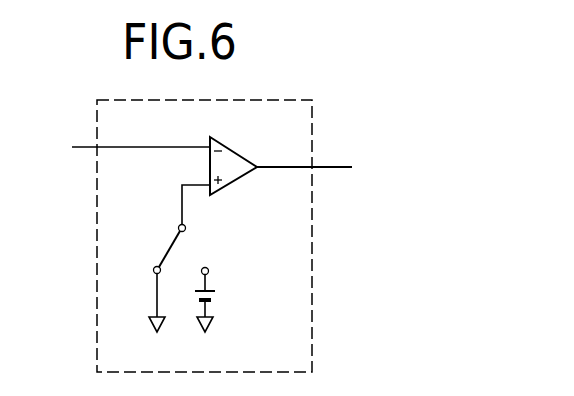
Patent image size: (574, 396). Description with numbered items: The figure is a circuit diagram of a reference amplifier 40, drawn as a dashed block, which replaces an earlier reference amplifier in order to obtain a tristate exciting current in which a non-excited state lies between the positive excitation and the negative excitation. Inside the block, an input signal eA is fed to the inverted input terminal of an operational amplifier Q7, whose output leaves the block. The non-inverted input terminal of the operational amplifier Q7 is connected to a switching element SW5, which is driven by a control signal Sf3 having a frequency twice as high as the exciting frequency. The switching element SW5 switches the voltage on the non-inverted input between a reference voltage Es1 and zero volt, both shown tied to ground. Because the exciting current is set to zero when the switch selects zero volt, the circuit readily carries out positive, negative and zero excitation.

The reference amplifier 40 is at (312, 110).
The operational amplifier Q7 is at (238, 162).
The switching element SW5 is at (147, 279).
The control signal Sf3 is at (180, 253).
The reference voltage Es1 is at (220, 300).
The input signal eA is at (126, 148).